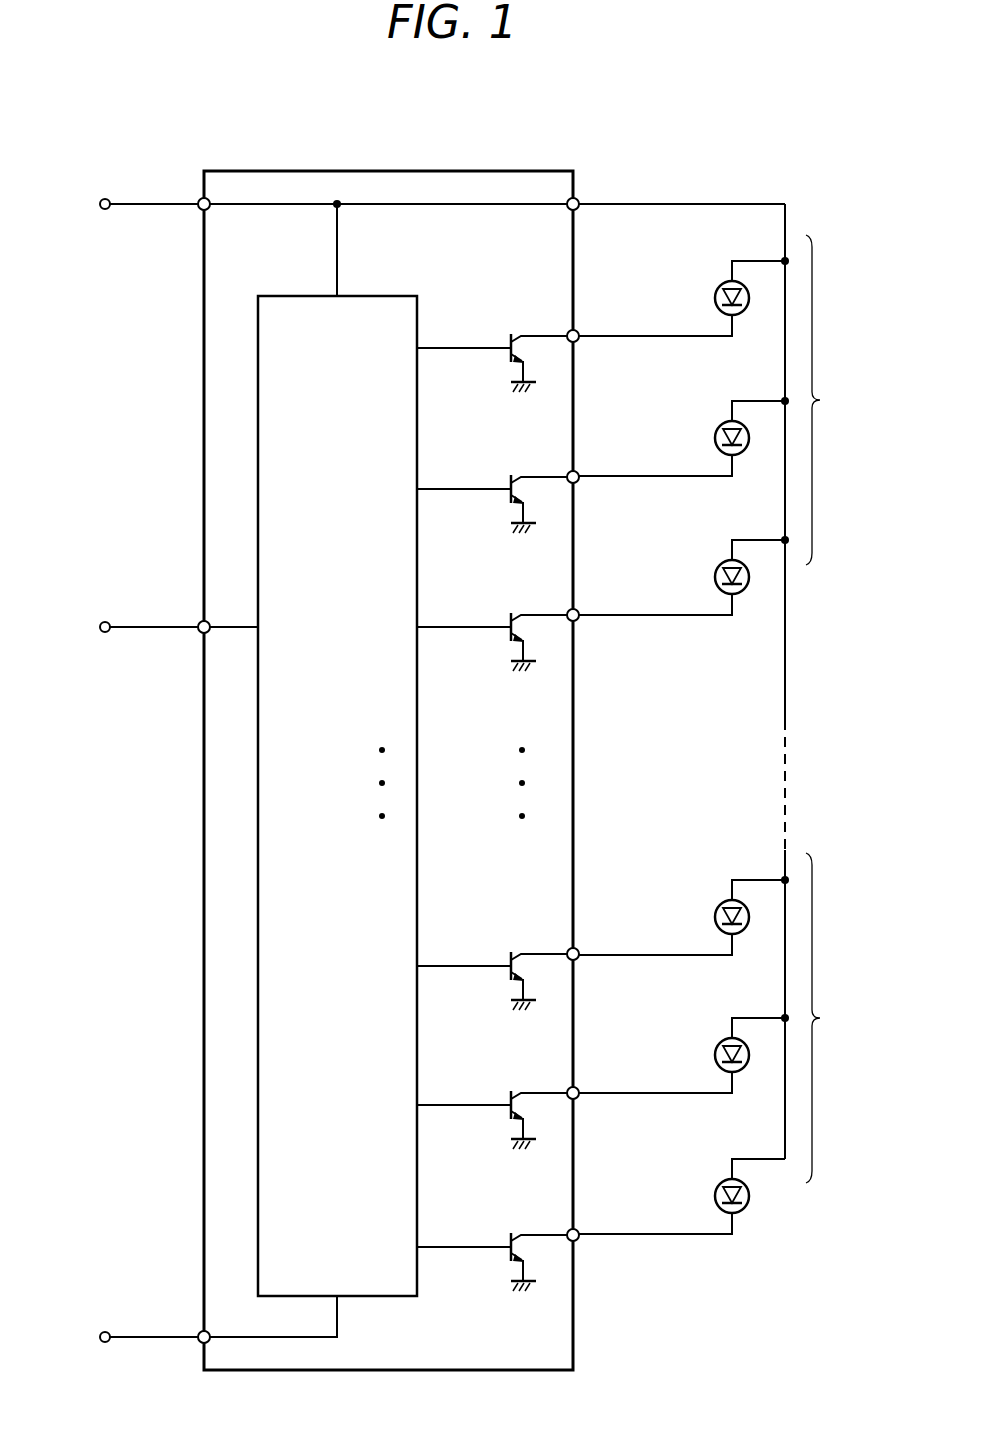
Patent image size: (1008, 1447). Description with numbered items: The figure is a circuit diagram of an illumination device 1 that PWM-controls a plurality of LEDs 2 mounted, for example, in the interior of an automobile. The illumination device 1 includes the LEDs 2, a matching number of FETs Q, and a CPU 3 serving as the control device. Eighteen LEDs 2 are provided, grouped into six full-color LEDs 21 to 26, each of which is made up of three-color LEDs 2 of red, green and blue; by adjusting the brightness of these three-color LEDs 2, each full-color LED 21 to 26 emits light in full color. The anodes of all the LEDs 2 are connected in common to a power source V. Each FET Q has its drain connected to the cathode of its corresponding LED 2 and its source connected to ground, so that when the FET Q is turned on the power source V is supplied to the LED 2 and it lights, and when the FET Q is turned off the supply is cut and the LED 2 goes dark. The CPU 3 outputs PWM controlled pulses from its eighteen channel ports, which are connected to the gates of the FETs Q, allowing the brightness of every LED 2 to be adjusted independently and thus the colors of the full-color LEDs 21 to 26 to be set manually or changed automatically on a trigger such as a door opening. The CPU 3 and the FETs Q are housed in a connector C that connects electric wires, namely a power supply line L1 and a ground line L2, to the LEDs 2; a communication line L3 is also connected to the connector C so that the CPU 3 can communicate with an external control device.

The illumination device 1 is at (614, 188).
The LED 2 is at (678, 719).
The CPU 3 is at (381, 296).
The full-color LED 21 is at (831, 400).
The full-color LED 26 is at (831, 1018).
The connector C is at (522, 171).
The FET Q is at (495, 789).
The power source V is at (103, 201).
The power supply line L1 is at (154, 202).
The ground line L2 is at (154, 1335).
The communication line L3 is at (154, 625).